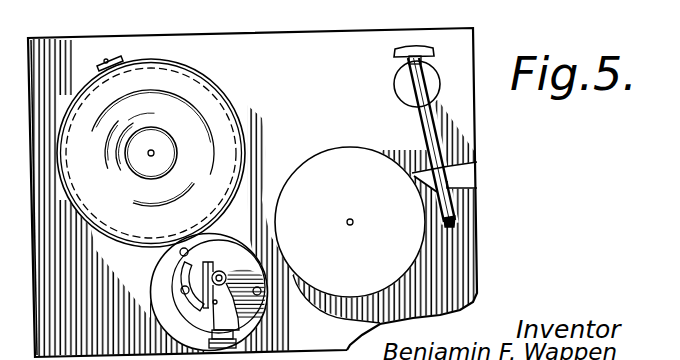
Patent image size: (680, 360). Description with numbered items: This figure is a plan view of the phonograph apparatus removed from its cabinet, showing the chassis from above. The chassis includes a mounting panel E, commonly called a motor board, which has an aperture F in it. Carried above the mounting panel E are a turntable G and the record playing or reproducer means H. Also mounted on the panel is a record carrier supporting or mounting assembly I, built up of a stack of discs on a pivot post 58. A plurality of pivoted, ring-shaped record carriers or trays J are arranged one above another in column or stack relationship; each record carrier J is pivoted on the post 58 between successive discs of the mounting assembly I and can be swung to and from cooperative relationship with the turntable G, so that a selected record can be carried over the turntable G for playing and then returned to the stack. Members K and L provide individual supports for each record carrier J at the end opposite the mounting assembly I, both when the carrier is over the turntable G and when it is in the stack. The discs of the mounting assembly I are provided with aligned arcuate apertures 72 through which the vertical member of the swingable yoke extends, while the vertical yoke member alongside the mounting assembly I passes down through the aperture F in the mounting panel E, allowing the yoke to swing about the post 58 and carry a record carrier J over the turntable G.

The mounting panel E is at (477, 268).
The record carrier J is at (235, 104).
The support member L is at (100, 64).
The aperture F is at (160, 280).
The arcuate aperture 72 is at (183, 292).
The pivot post 58 is at (224, 272).
The record carrier mounting assembly I is at (261, 294).
The turntable G is at (403, 275).
The reproducer means H is at (452, 218).
The support member K is at (458, 172).